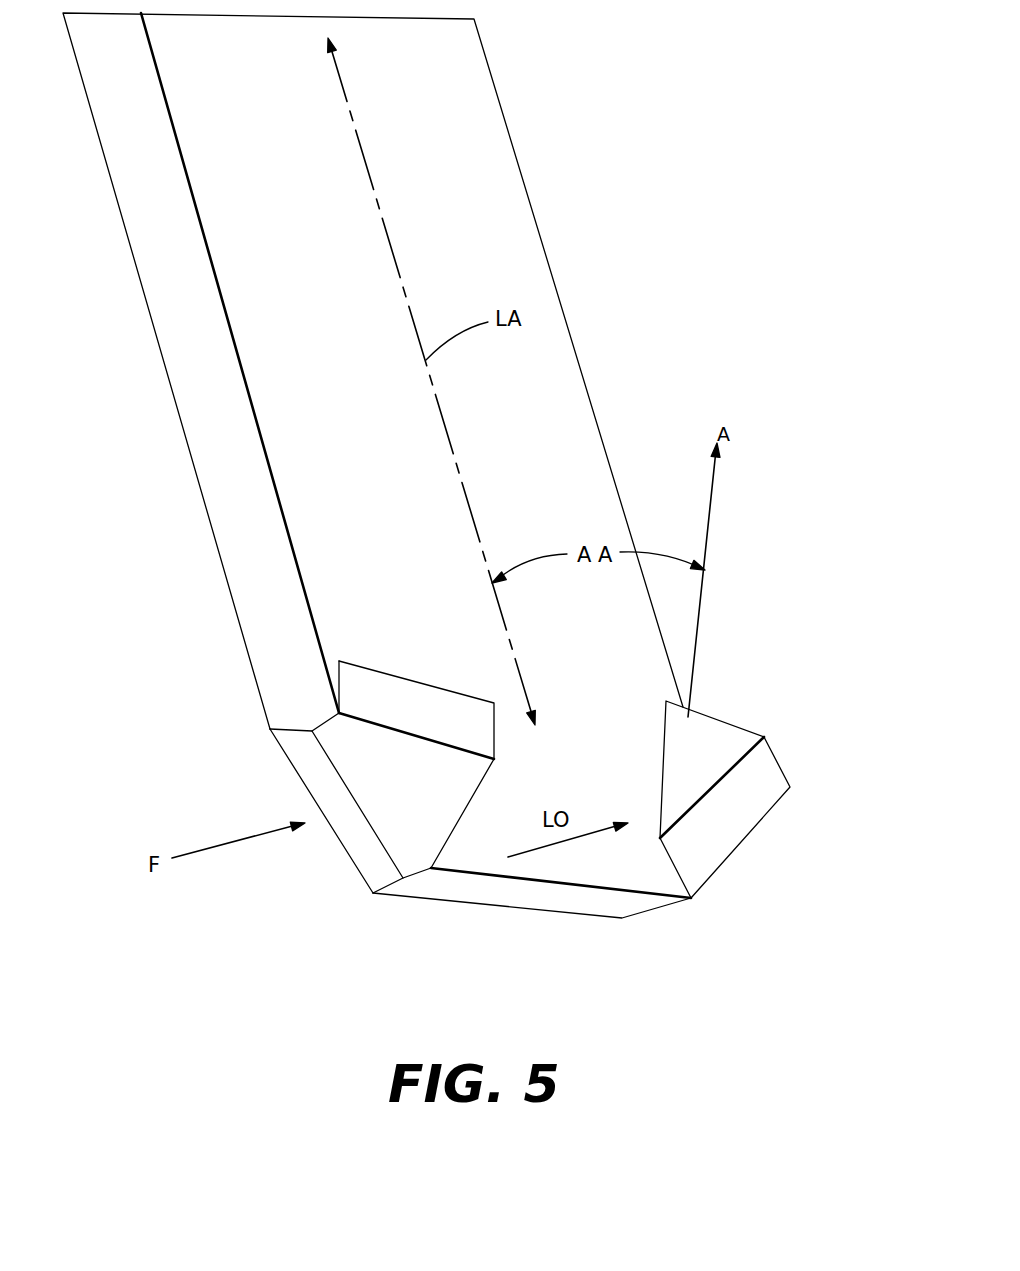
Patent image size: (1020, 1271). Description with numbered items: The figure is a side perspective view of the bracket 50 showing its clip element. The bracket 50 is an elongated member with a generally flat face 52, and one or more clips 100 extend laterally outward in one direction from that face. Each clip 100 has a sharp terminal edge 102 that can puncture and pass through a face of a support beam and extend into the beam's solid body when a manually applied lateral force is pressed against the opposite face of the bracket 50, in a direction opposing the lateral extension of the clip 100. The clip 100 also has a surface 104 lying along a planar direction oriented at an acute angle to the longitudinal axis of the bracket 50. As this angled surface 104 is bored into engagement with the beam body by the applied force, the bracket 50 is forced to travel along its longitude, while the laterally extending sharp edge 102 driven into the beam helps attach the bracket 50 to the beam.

The bracket 50 is at (530, 184).
The generally flat face 52 is at (443, 107).
The clip 100 is at (772, 790).
The sharp terminal edge 102 is at (777, 758).
The surface 104 is at (720, 766).